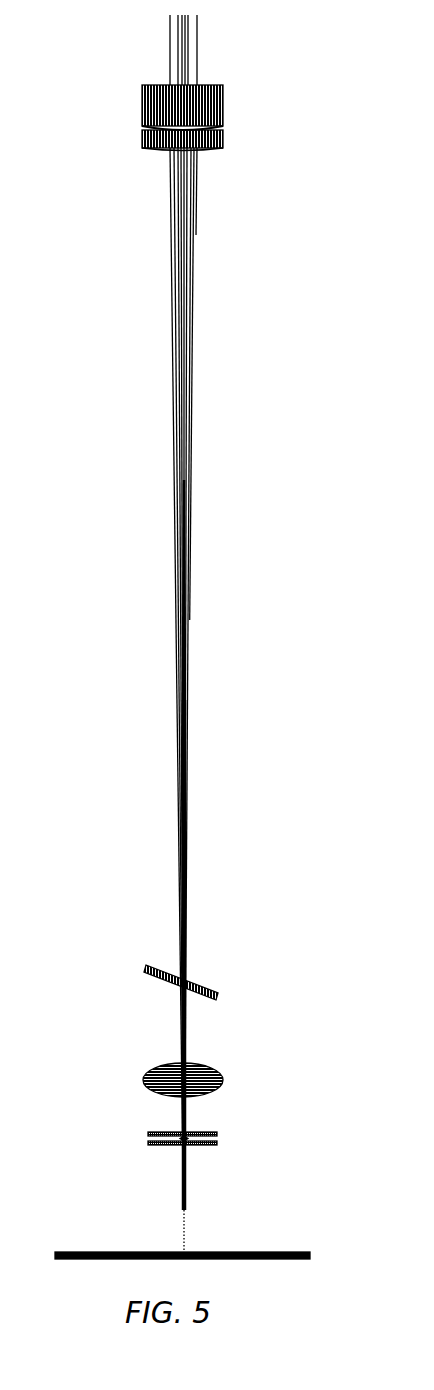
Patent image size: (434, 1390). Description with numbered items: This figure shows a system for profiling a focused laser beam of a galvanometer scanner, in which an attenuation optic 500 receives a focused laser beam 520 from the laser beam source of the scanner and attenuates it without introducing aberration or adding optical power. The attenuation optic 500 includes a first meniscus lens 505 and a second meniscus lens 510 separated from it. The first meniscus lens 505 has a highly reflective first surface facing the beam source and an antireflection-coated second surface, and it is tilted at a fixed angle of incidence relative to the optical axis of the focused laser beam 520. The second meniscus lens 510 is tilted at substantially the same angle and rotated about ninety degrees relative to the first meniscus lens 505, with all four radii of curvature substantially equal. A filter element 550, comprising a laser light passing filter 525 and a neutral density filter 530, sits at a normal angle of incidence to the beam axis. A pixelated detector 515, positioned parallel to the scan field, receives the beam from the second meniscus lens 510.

The attenuation optic 500 is at (283, 973).
The first meniscus lens 505 is at (143, 966).
The second meniscus lens 510 is at (141, 1079).
The pixelated detector 515 is at (296, 1250).
The focused laser beam 520 is at (168, 276).
The laser light passing filter 525 is at (146, 1134).
The neutral density filter 530 is at (196, 1149).
The filter element 550 is at (177, 1159).